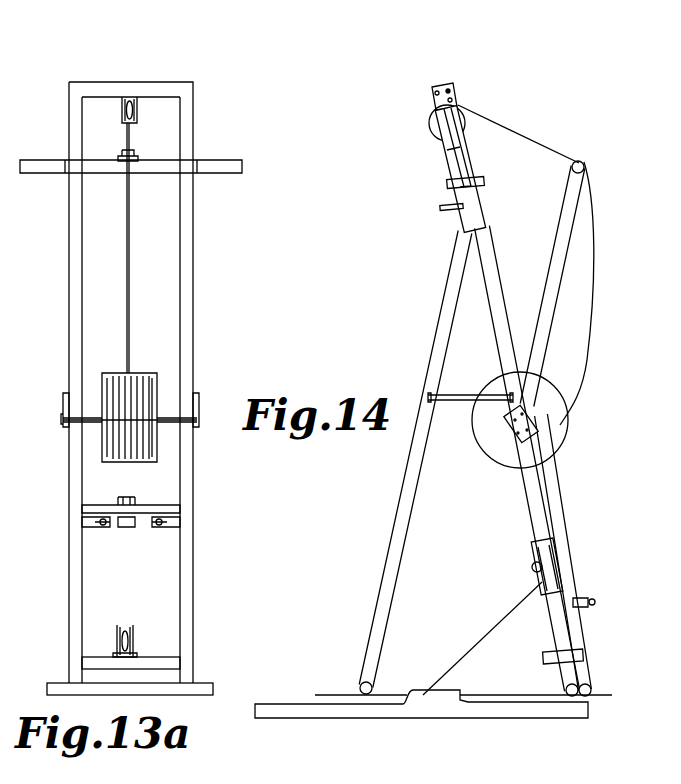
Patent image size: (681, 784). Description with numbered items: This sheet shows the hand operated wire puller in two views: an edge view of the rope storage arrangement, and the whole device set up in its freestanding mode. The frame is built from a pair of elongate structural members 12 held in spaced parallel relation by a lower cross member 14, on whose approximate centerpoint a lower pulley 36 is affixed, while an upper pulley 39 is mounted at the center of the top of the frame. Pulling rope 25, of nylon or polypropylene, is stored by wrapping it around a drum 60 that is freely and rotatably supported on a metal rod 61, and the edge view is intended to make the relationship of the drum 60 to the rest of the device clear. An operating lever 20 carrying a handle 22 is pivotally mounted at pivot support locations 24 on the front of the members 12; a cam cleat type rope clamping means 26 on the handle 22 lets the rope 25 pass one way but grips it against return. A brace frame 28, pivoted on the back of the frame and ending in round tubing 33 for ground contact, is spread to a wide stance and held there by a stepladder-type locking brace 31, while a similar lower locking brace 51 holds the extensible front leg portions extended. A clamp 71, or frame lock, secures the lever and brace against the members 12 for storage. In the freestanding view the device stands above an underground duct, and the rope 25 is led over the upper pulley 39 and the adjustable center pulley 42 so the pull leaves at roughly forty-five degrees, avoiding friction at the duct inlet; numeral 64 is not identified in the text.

In FIG. 14, the elongate structural member 12 is at (482, 255).
In FIG. 13A, the cross member 14 is at (155, 661).
In FIG. 13A, the operating lever 20 is at (241, 166).
In FIG. 13A, the handle 22 is at (160, 172).
In FIG. 14, the pivot support location 24 is at (535, 420).
In FIG. 13A, the rope 25 is at (133, 262).
In FIG. 14, the rope 25 is at (512, 132).
In FIG. 13A, the rope clamping means 26 is at (136, 158).
In FIG. 14, the brace frame 28 is at (433, 475).
In FIG. 13A, the locking brace 31 is at (68, 395).
In FIG. 14, the locking brace 31 is at (458, 401).
In FIG. 14, the round tubing 33 is at (360, 686).
In FIG. 13A, the pulley 36 is at (132, 632).
In FIG. 13A, the pulley 39 is at (122, 103).
In FIG. 13A, the pulley 42 is at (135, 500).
In FIG. 14, the lower locking brace 51 is at (562, 550).
In FIG. 13A, the drum 60 is at (140, 390).
In FIG. 14, the drum 60 is at (555, 397).
In FIG. 13A, the metal rod 61 is at (165, 421).
In FIG. 13A, the clamp 64 is at (180, 522).
In FIG. 14, the clamp 64 is at (596, 602).
In FIG. 14, the clamp 71 is at (583, 658).